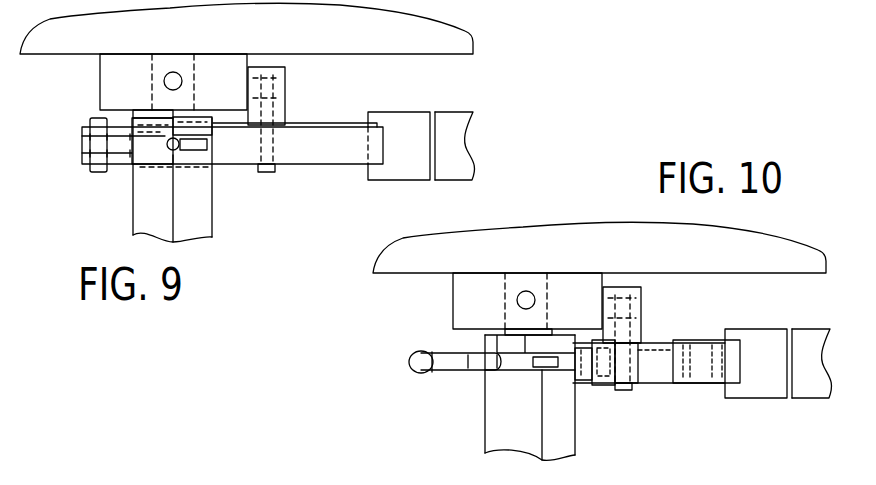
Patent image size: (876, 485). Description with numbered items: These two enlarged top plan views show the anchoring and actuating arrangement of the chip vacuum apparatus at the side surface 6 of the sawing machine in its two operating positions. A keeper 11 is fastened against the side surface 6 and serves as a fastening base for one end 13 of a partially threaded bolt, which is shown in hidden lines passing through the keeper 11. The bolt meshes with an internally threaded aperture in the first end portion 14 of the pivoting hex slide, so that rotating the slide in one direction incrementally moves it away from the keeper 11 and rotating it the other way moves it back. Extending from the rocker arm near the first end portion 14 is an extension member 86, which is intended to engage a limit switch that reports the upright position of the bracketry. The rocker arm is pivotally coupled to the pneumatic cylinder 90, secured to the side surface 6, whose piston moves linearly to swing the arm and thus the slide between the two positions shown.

In FIG. 9, the side surface 6 is at (338, 55).
In FIG. 10, the side surface 6 is at (697, 275).
In FIG. 9, the keeper 11 is at (215, 63).
In FIG. 10, the keeper 11 is at (572, 282).
In FIG. 9, the end of bolt 13 is at (163, 63).
In FIG. 10, the end of bolt 13 is at (522, 282).
In FIG. 9, the first end portion 14 is at (207, 213).
In FIG. 10, the first end portion 14 is at (565, 430).
In FIG. 9, the extension member 86 is at (167, 158).
In FIG. 10, the extension member 86 is at (455, 372).
In FIG. 9, the pneumatic cylinder 90 is at (412, 123).
In FIG. 10, the pneumatic cylinder 90 is at (772, 338).